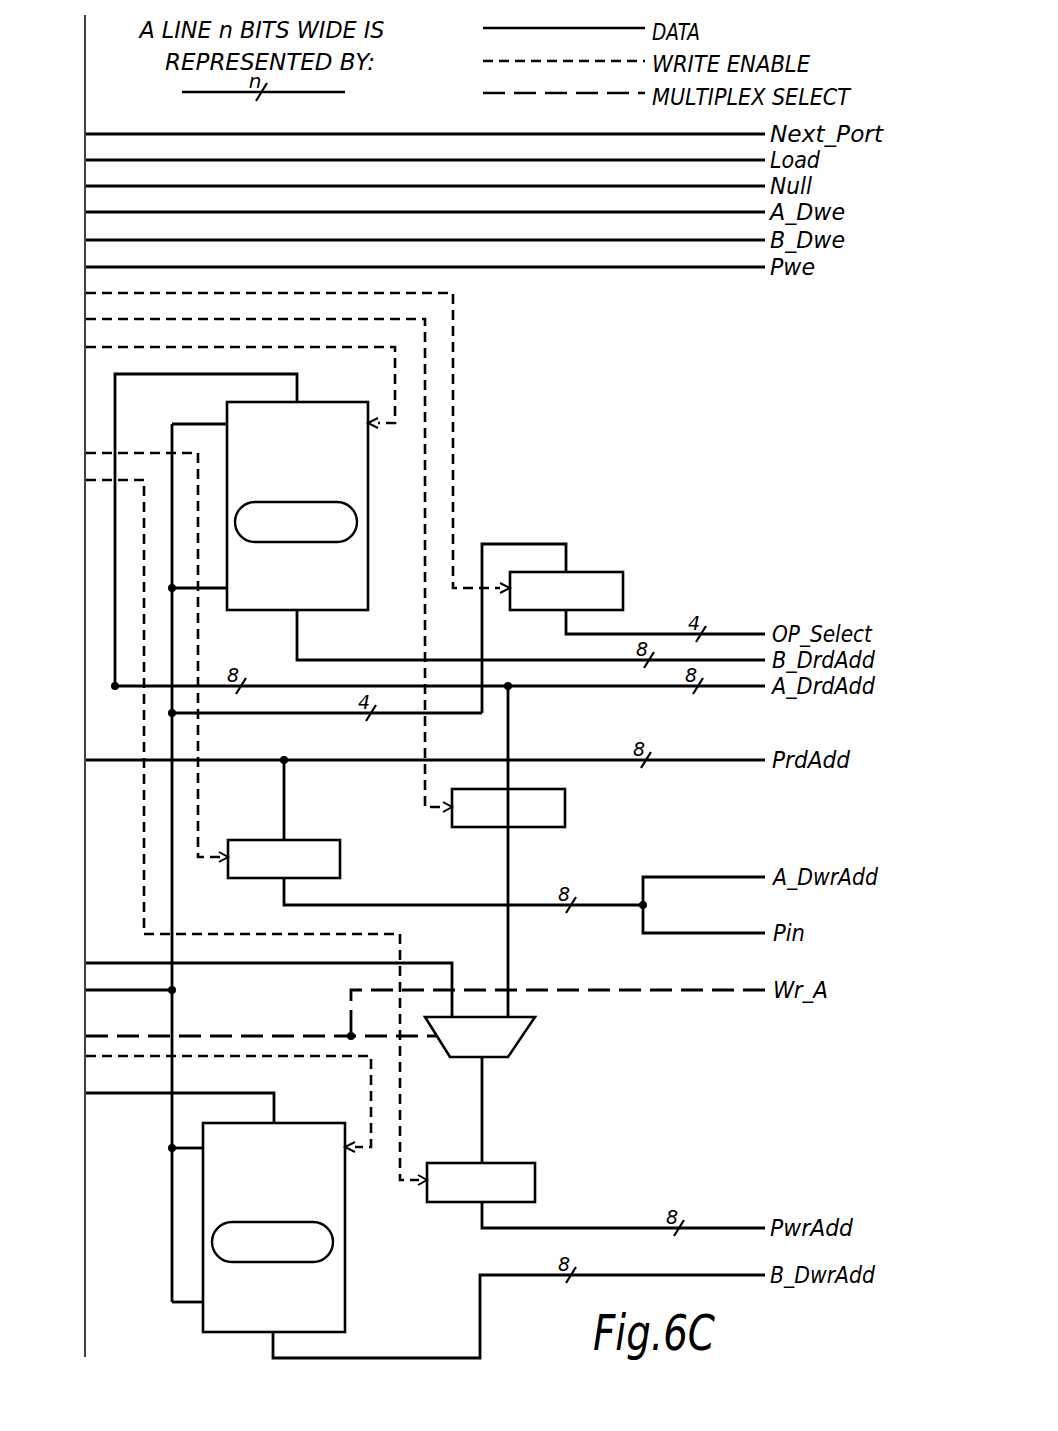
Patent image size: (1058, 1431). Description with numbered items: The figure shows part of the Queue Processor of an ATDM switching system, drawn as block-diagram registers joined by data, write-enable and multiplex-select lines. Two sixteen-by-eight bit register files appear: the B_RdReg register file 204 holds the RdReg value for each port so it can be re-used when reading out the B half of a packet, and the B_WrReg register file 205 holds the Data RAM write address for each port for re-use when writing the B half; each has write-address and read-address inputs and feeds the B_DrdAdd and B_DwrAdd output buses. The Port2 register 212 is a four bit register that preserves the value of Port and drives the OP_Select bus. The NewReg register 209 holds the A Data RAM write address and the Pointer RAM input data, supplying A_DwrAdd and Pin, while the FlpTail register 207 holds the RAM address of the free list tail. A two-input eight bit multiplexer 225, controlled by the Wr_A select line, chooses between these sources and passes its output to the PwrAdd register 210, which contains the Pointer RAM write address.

The B_RdReg register file 204 is at (299, 492).
The B_WrReg register file 205 is at (274, 1215).
The FlpTail register 207 is at (510, 826).
The NewReg register 209 is at (285, 846).
The PwrAdd register 210 is at (483, 1170).
The Port2 register 212 is at (568, 577).
The multiplexer 225 is at (480, 1052).